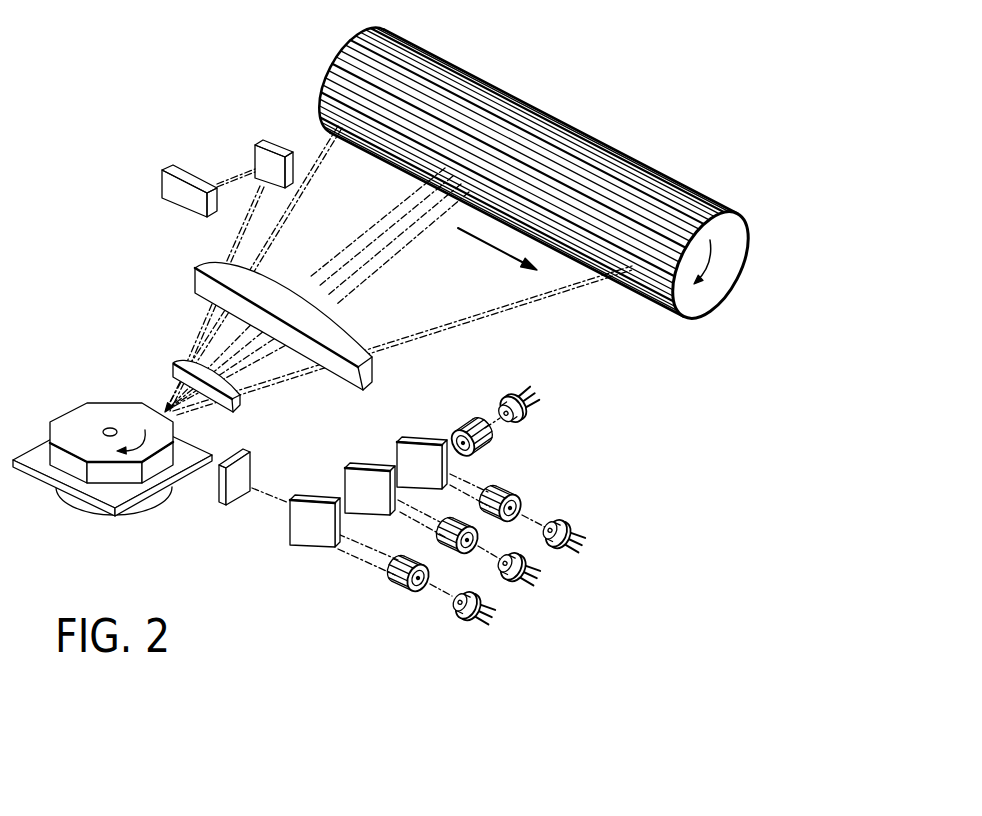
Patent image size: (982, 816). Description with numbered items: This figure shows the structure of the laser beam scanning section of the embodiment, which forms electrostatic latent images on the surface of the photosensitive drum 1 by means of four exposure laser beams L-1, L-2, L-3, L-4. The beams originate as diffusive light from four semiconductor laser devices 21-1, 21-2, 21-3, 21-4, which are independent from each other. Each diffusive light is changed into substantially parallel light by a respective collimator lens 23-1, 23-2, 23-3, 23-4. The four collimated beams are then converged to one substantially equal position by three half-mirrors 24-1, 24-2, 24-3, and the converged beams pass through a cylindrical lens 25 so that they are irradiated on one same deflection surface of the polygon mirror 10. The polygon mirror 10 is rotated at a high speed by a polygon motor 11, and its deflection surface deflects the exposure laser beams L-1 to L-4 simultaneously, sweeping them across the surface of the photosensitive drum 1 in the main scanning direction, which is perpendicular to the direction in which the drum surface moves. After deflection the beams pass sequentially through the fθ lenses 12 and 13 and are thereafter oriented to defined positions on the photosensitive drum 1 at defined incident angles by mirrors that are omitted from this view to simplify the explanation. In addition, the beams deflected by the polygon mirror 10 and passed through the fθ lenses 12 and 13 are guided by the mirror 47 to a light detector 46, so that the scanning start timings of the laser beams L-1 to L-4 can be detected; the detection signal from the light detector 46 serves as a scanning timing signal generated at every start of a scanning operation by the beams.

The photosensitive drum 1 is at (529, 122).
The polygon mirror 10 is at (75, 422).
The polygon motor 11 is at (78, 507).
The fθ lens 12 is at (173, 365).
The fθ lens 13 is at (203, 285).
The semiconductor laser device 21-1 is at (463, 630).
The semiconductor laser device 21-2 is at (533, 582).
The semiconductor laser device 21-3 is at (560, 556).
The semiconductor laser device 21-4 is at (528, 418).
The collimator lens 23-1 is at (397, 590).
The collimator lens 23-2 is at (452, 550).
The collimator lens 23-3 is at (512, 494).
The collimator lens 23-4 is at (462, 428).
The half-mirror 24-1 is at (300, 547).
The half-mirror 24-2 is at (345, 482).
The half-mirror 24-3 is at (397, 457).
The cylindrical lens 25 is at (218, 490).
The light detector 46 is at (162, 180).
The mirror 47 is at (278, 142).
The exposure laser beam L-1 is at (406, 198).
The exposure laser beam L-2 is at (375, 224).
The exposure laser beam L-3 is at (427, 228).
The exposure laser beam L-4 is at (380, 260).